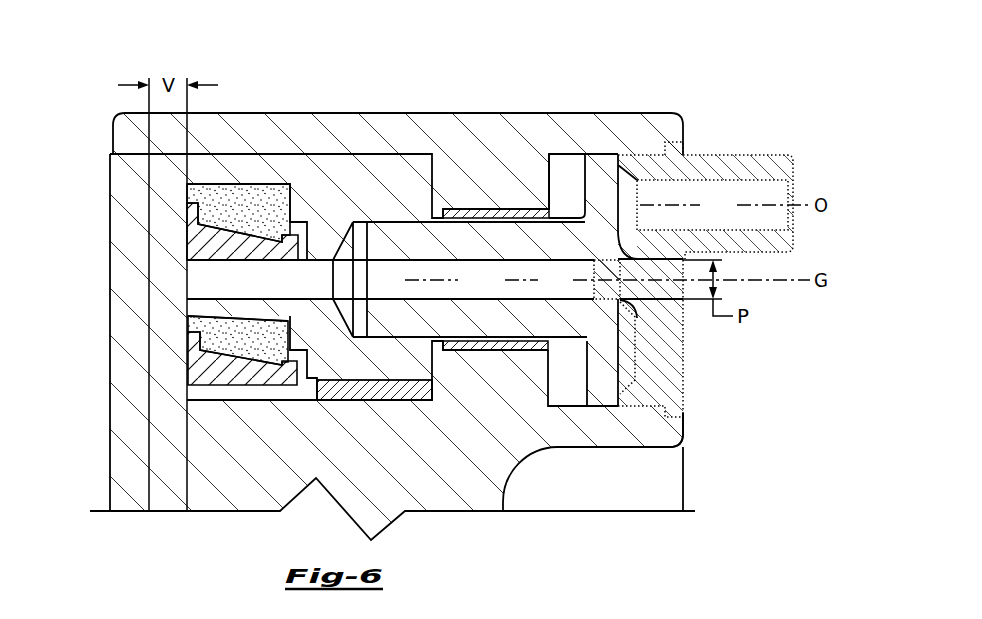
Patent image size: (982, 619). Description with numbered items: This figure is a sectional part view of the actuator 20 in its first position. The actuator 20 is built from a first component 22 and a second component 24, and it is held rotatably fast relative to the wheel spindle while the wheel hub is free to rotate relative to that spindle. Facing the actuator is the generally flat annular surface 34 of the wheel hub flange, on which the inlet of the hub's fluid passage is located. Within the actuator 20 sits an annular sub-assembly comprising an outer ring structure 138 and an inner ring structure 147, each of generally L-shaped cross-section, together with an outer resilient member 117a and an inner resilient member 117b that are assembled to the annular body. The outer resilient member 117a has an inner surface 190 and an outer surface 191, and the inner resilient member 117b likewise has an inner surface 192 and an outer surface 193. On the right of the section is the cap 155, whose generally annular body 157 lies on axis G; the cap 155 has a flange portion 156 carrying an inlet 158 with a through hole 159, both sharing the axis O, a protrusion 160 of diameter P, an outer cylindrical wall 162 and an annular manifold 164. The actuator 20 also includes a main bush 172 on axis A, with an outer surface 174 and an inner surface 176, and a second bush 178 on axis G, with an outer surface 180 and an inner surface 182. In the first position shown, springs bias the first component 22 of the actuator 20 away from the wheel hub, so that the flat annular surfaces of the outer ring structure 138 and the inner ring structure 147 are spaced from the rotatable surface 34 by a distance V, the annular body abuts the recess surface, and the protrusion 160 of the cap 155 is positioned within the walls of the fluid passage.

The actuator 20 is at (443, 85).
The first component 22 is at (334, 113).
The second component 24 is at (277, 157).
The generally flat annular surface 34 is at (143, 440).
The outer resilient member 117a is at (213, 209).
The inner resilient member 117b is at (218, 330).
The outer ring structure 138 is at (213, 250).
The inner ring structure 147 is at (190, 378).
The cap 155 is at (684, 347).
The flange portion 156 is at (683, 412).
The generally annular body 157 is at (673, 141).
The inlet 158 is at (740, 170).
The through hole 159 is at (734, 215).
The protrusion 160 is at (597, 277).
The outer cylindrical wall 162 is at (640, 155).
The annular manifold 164 is at (628, 358).
The main bush 172 is at (362, 395).
The outer surface 174 is at (406, 368).
The inner surface 176 is at (400, 398).
The second bush 178 is at (517, 216).
The outer surface 180 is at (483, 219).
The inner surface 182 is at (484, 220).
The inner surface 190 is at (198, 222).
The outer surface 191 is at (207, 183).
The inner surface 192 is at (200, 350).
The outer surface 193 is at (232, 316).